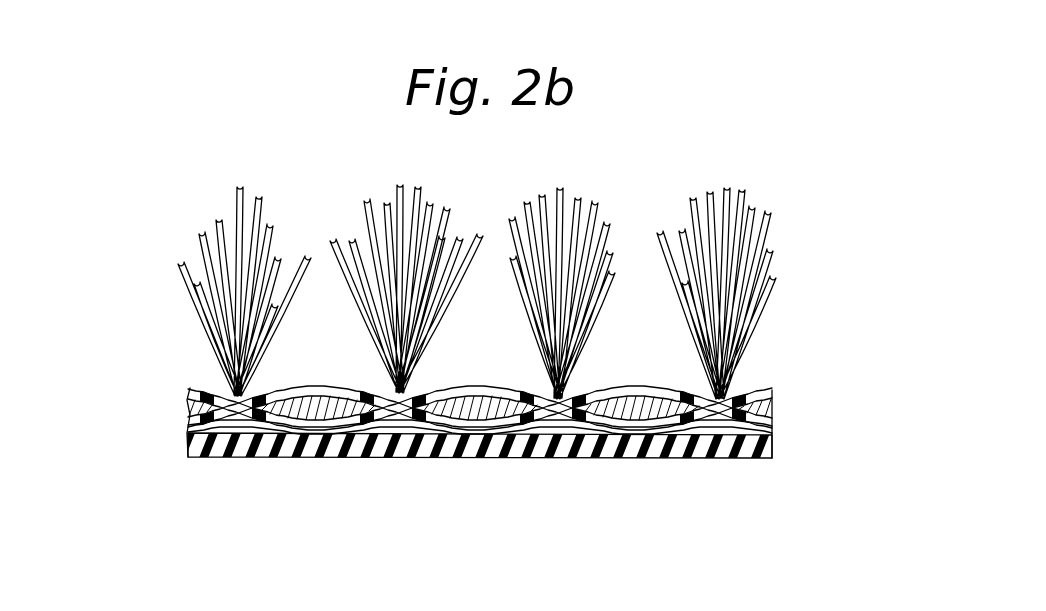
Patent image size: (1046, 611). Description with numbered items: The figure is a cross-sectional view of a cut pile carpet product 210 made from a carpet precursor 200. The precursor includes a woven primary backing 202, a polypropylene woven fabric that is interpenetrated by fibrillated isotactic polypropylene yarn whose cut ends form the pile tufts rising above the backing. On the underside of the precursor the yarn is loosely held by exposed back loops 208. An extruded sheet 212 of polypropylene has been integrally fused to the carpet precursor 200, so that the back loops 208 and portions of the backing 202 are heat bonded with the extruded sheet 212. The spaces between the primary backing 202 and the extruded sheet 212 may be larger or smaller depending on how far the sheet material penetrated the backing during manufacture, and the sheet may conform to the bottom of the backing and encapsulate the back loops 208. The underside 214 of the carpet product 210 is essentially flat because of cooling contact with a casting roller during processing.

The carpet precursor 200 is at (750, 352).
The woven primary backing 202 is at (525, 472).
The back loops 208 is at (466, 455).
The carpet product 210 is at (210, 362).
The extruded sheet 212 is at (737, 445).
The underside 214 is at (347, 457).